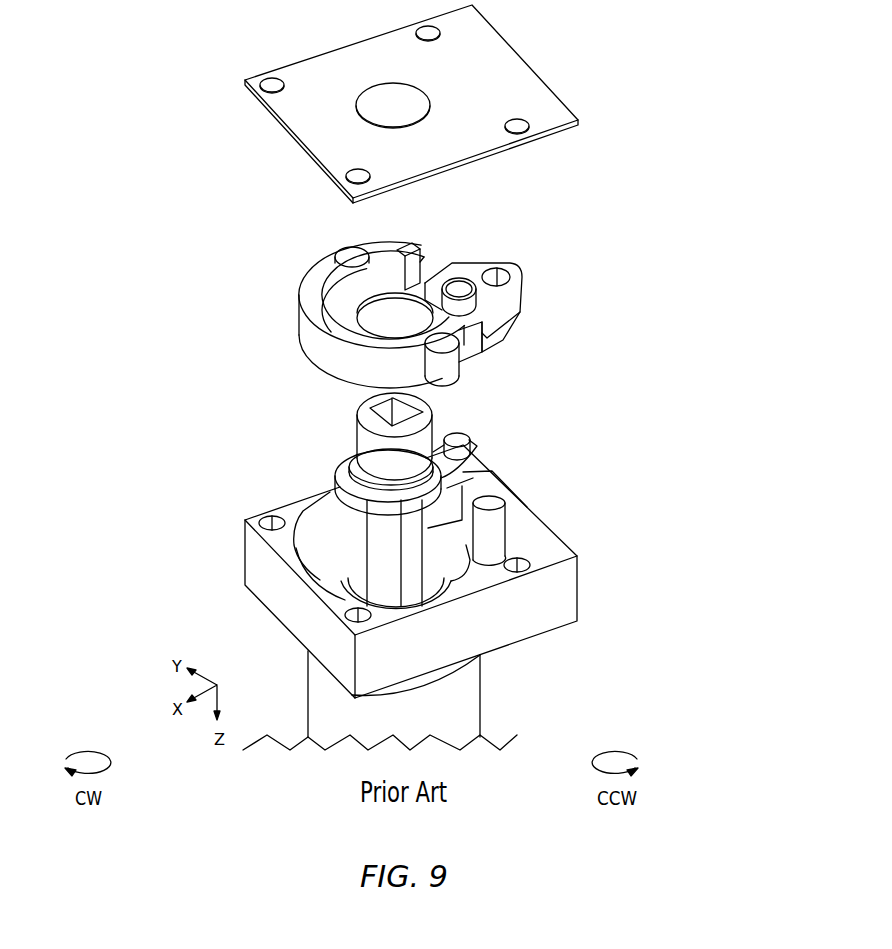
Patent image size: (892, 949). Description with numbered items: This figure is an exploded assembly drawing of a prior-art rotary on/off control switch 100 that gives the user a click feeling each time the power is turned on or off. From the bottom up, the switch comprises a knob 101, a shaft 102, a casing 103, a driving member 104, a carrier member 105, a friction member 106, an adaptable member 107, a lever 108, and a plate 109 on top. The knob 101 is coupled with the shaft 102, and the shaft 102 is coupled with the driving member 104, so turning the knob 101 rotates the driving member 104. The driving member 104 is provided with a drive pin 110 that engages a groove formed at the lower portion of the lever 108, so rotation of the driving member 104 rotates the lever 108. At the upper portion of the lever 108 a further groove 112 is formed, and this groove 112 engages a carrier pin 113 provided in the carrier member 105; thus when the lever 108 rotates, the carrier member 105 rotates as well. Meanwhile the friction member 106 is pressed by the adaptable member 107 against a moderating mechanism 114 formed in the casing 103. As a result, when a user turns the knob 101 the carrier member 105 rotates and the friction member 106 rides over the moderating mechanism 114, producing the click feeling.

The rotary on/off control switch 100 is at (440, 422).
The knob 101 is at (481, 693).
The shaft 102 is at (487, 500).
The casing 103 is at (579, 590).
The driving member 104 is at (357, 450).
The carrier member 105 is at (298, 325).
The friction member 106 is at (350, 252).
The adaptable member 107 is at (387, 273).
The lever 108 is at (522, 297).
The plate 109 is at (527, 57).
The drive pin 110 is at (467, 438).
The groove 112 is at (458, 290).
The carrier pin 113 is at (460, 286).
The moderating mechanism 114 is at (320, 502).